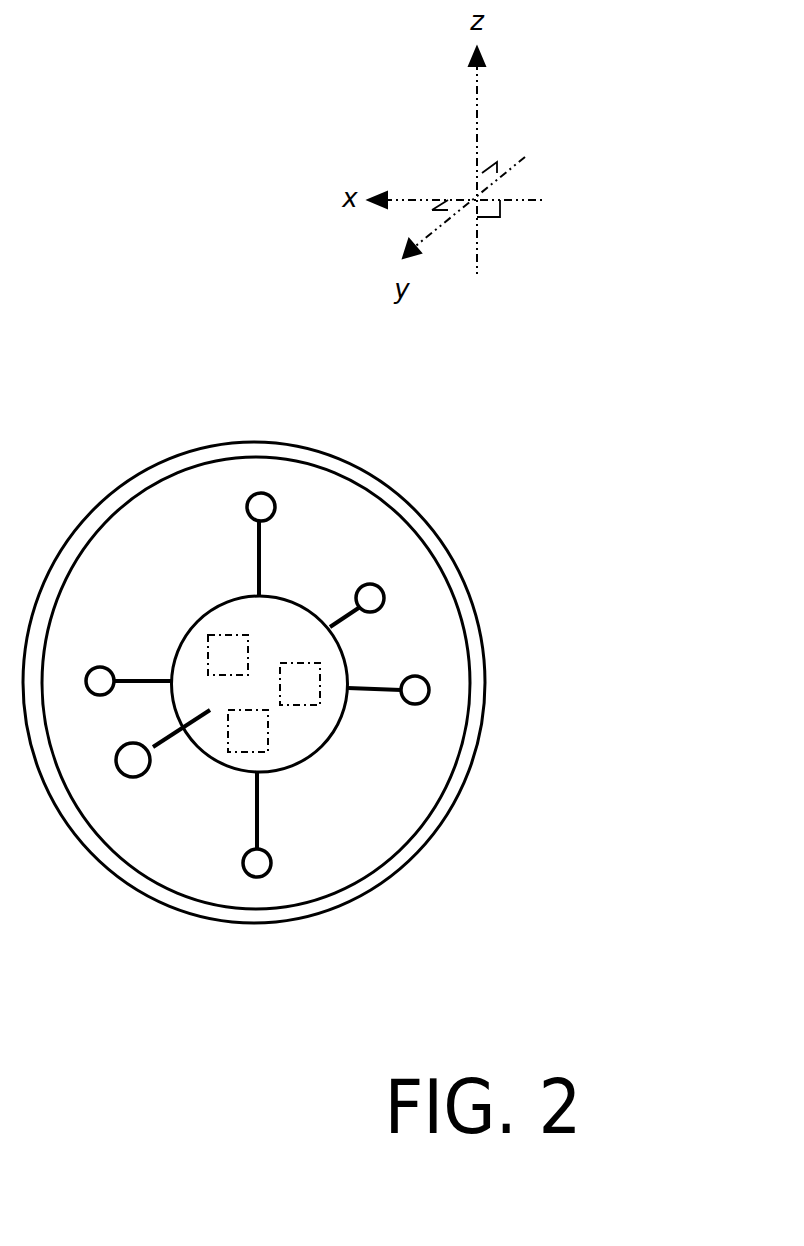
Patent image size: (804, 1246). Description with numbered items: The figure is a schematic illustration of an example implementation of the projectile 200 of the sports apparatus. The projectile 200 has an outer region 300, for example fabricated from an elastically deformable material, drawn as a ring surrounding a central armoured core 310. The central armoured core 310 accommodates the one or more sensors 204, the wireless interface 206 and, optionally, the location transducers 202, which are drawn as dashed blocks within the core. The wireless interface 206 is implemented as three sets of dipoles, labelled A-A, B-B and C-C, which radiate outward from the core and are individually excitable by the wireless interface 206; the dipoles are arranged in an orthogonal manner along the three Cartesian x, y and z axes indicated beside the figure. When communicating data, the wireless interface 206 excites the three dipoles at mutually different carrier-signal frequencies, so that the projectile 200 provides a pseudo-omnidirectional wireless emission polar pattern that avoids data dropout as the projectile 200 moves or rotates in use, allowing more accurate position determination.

The projectile 200 is at (547, 772).
The location transducers 202 is at (228, 650).
The sensors 204 is at (303, 680).
The wireless interface 206 is at (247, 740).
The outer region 300 is at (463, 588).
The central armoured core 310 is at (293, 623).